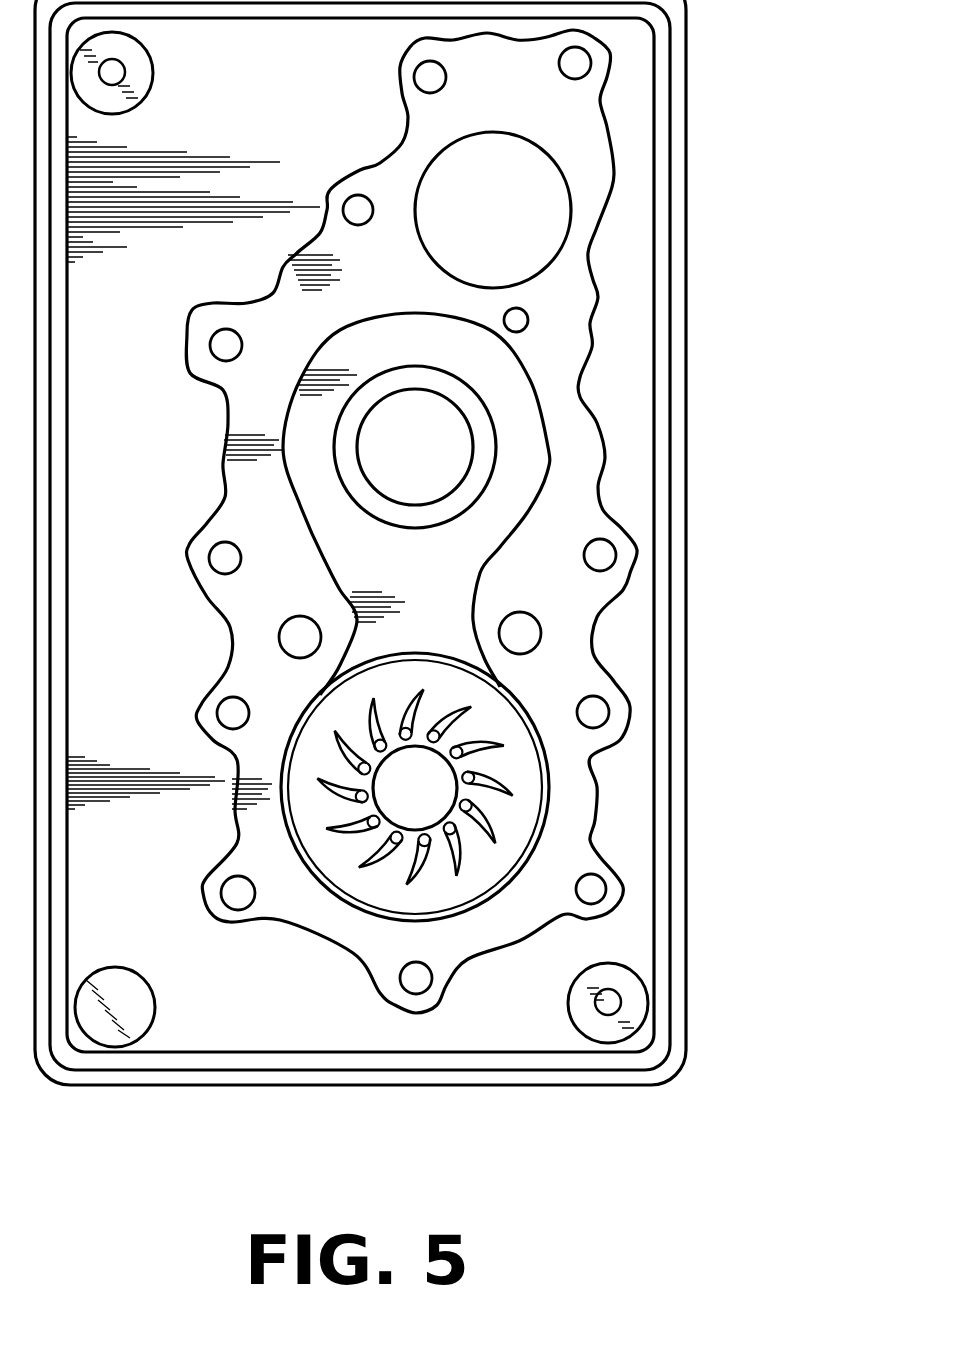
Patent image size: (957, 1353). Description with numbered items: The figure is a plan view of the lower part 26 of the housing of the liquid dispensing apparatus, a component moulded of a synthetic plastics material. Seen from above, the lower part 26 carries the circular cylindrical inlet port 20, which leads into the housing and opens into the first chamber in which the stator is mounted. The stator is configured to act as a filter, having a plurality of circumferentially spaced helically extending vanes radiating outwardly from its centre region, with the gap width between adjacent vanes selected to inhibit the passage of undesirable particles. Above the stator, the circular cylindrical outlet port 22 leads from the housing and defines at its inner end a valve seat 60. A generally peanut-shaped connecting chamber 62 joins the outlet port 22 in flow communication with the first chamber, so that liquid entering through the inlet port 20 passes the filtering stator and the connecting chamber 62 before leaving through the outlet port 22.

The inlet port 20 is at (423, 776).
The outlet port 22 is at (424, 435).
The lower part 26 is at (232, 1062).
The valve seat 60 is at (474, 487).
The connecting chamber 62 is at (372, 553).